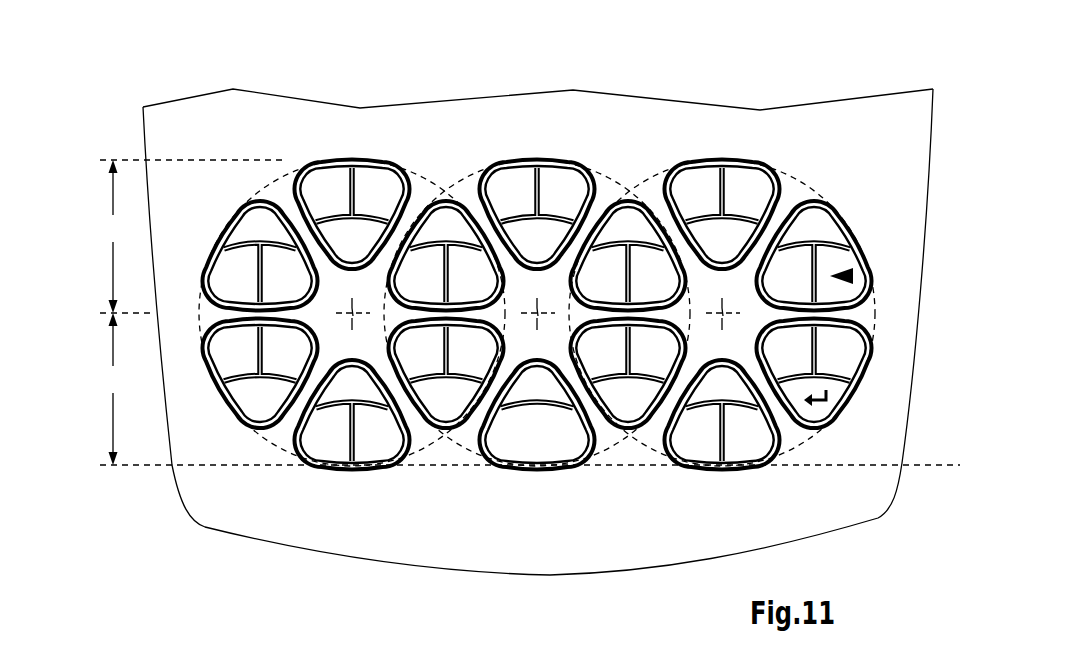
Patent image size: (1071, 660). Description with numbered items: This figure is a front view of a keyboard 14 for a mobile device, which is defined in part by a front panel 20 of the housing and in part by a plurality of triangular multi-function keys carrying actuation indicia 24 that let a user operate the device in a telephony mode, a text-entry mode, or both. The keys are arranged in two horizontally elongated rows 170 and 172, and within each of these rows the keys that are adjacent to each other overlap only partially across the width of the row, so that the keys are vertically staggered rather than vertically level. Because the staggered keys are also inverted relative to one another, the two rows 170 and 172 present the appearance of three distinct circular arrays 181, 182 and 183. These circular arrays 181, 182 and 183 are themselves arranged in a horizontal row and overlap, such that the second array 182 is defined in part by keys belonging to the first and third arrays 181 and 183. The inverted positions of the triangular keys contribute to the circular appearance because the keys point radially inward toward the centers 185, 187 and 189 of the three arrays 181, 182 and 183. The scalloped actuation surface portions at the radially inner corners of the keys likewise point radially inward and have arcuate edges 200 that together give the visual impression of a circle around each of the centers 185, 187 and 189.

The keyboard 14 is at (238, 122).
The front panel 20 is at (179, 133).
The actuation indicia 24 is at (744, 438).
The row of keys 170 is at (190, 236).
The row of keys 172 is at (527, 389).
The first circular array 181 is at (424, 158).
The second circular array 182 is at (605, 158).
The third circular array 183 is at (736, 298).
The center of first array 185 is at (346, 328).
The center of second array 187 is at (531, 328).
The center of third array 189 is at (716, 328).
The arcuate edges 200 is at (808, 265).